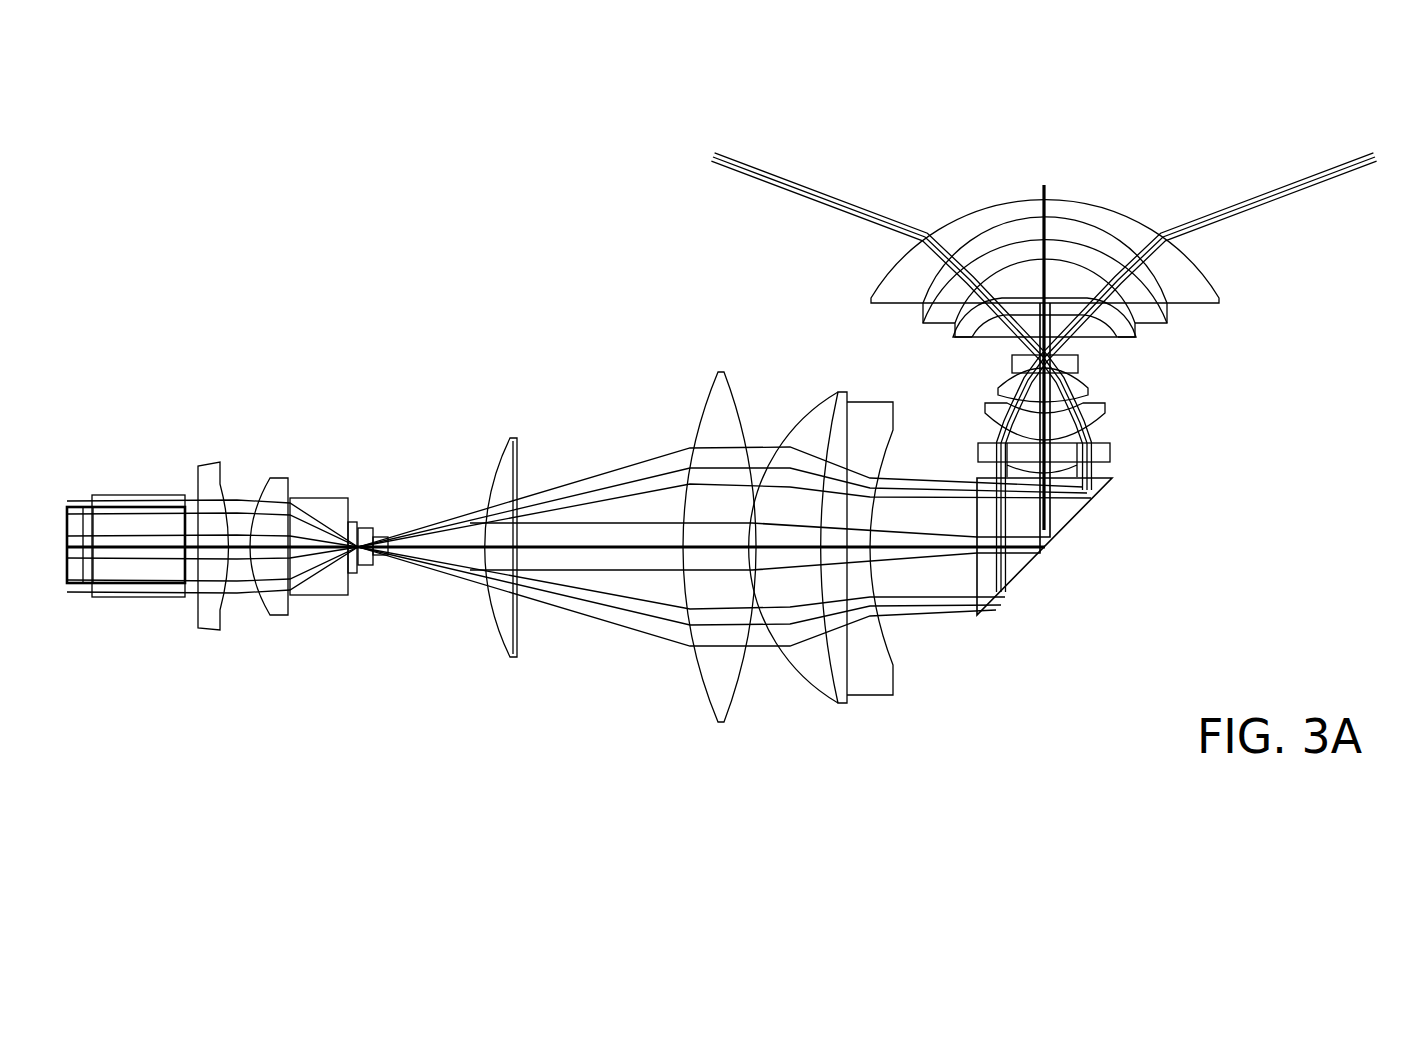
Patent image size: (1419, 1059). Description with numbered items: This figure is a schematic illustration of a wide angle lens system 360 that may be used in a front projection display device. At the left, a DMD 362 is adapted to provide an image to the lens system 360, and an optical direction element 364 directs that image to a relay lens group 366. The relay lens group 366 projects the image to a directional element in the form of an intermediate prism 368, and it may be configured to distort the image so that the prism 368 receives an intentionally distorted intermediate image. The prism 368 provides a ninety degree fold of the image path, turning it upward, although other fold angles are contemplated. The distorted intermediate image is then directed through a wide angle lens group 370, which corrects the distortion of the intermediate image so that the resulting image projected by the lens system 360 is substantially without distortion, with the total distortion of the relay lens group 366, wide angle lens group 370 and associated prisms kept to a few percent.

The lens system 360 is at (199, 320).
The DMD 362 is at (67, 507).
The optical direction element 364 is at (113, 500).
The relay lens group 366 is at (913, 387).
The prism 368 is at (1018, 582).
The wide angle lens group 370 is at (1217, 198).